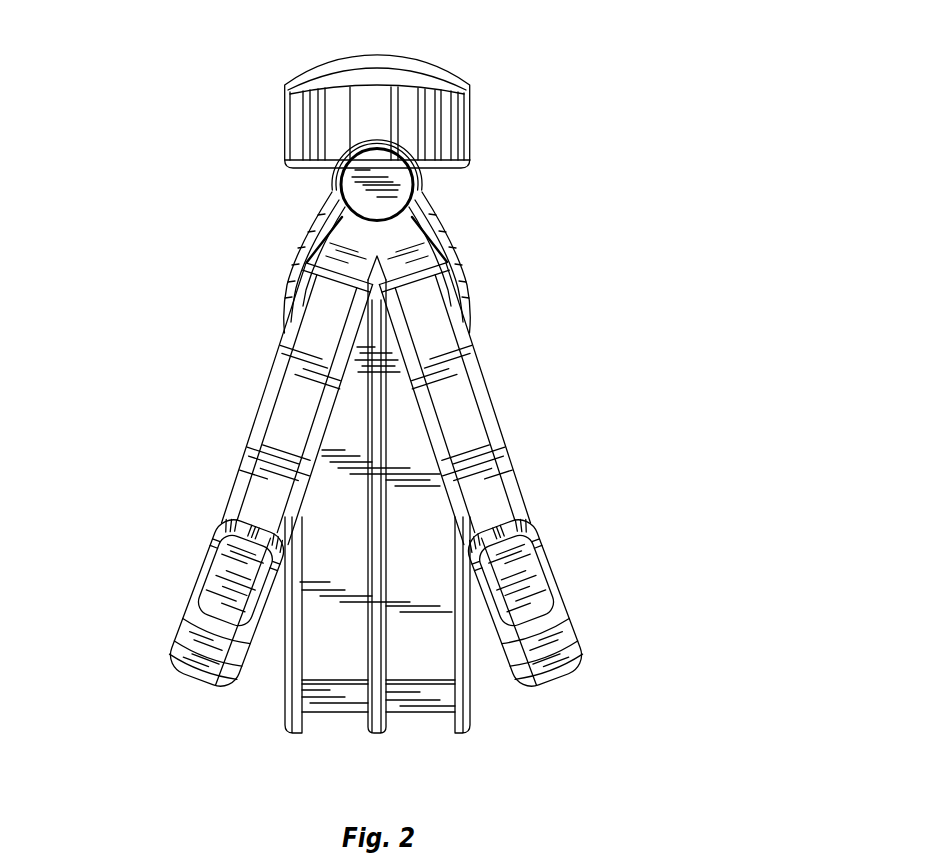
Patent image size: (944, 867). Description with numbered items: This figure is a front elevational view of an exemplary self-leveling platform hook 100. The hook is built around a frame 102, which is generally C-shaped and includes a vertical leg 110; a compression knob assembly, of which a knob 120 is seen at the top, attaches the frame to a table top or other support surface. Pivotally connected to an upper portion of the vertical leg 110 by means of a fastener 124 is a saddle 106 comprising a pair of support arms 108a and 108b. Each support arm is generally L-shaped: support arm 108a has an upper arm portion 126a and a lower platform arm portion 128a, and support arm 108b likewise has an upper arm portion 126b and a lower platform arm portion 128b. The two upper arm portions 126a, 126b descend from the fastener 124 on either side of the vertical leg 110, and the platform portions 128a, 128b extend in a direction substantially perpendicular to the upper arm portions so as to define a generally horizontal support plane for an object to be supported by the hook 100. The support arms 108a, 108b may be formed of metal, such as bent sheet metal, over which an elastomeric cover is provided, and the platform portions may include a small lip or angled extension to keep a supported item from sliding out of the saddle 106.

The self-leveling platform hook 100 is at (131, 131).
The frame 102 is at (481, 291).
The saddle 106 is at (514, 477).
The support arm 108a is at (487, 408).
The support arm 108b is at (262, 410).
The vertical leg 110 is at (418, 650).
The knob 120 is at (388, 76).
The fastener 124 is at (398, 191).
The upper arm portion 126a is at (428, 352).
The upper arm portion 126b is at (320, 338).
The lower platform arm portion 128a is at (548, 571).
The lower platform arm portion 128b is at (198, 597).